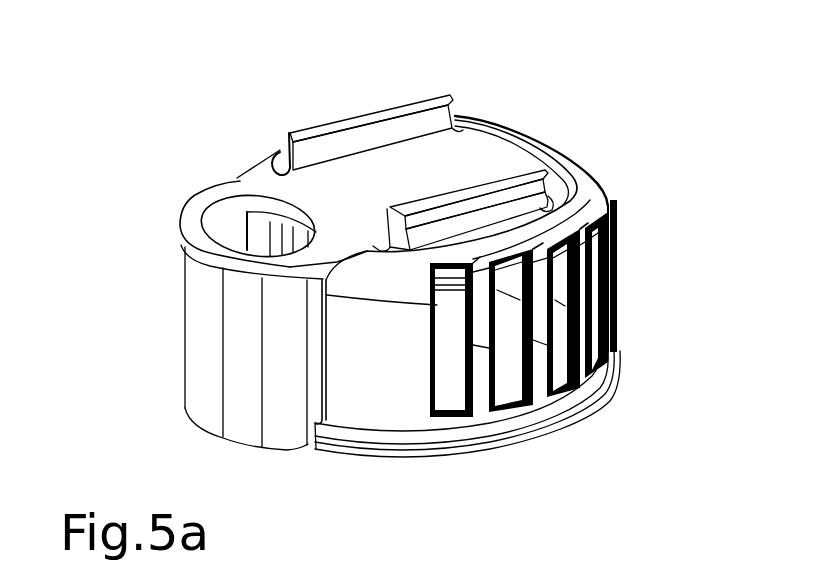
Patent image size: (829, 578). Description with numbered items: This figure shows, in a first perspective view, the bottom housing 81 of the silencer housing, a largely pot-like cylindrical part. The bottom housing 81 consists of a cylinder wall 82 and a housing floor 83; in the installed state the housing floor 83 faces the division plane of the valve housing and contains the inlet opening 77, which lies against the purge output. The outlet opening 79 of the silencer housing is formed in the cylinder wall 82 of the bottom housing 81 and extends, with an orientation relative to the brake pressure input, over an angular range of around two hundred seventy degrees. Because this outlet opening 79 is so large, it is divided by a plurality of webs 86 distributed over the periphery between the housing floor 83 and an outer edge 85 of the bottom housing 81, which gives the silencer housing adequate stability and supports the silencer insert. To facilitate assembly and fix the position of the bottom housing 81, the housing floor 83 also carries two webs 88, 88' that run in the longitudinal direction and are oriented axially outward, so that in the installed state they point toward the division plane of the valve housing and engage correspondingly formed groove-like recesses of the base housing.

The bottom housing 81 is at (215, 116).
The inlet opening 77 is at (234, 227).
The housing floor 83 is at (482, 152).
The web 88 is at (367, 97).
The web 88' is at (562, 188).
The cylinder wall 82 is at (382, 367).
The outlet opening 79 is at (525, 341).
The webs 86 is at (543, 368).
The outer edge 85 is at (495, 446).